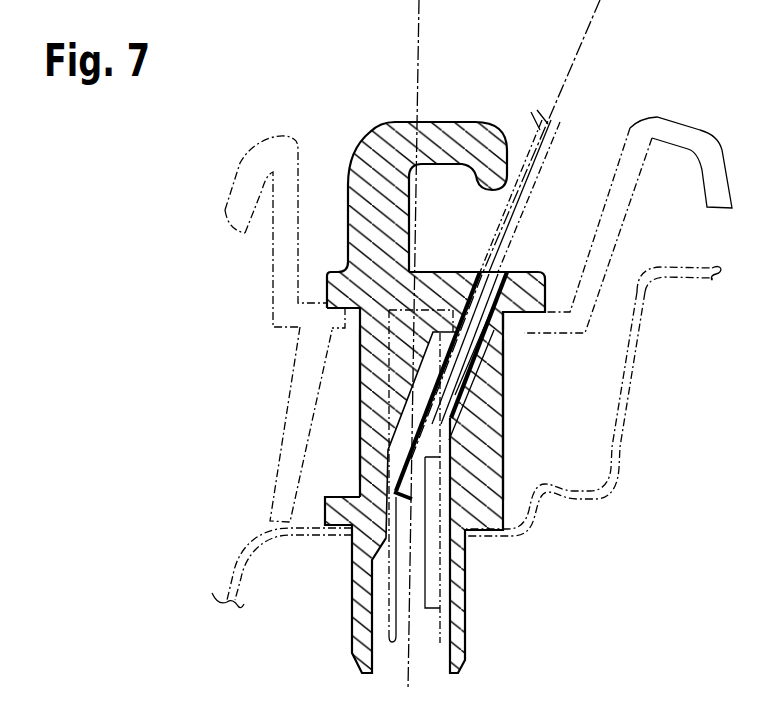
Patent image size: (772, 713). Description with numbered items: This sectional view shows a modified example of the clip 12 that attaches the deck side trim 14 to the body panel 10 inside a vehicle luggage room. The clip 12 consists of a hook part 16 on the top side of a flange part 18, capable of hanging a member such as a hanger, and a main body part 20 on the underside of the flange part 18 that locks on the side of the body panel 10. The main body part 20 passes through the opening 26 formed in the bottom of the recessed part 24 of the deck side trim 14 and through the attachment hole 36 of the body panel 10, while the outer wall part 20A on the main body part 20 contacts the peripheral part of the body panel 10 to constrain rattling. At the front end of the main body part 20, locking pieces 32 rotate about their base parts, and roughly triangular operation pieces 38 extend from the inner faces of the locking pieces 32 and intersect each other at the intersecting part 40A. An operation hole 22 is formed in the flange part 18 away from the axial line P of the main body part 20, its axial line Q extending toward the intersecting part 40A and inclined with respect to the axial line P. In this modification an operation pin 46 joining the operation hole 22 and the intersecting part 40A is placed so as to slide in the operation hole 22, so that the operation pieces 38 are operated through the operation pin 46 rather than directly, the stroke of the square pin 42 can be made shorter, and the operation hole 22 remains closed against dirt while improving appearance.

The body panel 10 is at (622, 436).
The clip 12 is at (502, 104).
The deck side trim 14 is at (680, 122).
The hook part 16 is at (400, 121).
The flange part 18 is at (540, 273).
The main body part 20 is at (510, 414).
The outer wall part 20A is at (484, 457).
The operation hole 22 is at (497, 262).
The recessed part 24 is at (616, 148).
The opening 26 is at (524, 333).
The locking piece 32 is at (404, 573).
The attachment hole 36 is at (353, 555).
The operation piece 38 is at (430, 592).
The intersecting part 40A is at (394, 491).
The square pin 42 is at (540, 165).
The operation pin 46 is at (504, 388).
The axial line of the main body part P is at (420, 45).
The axial line of the operation hole Q is at (582, 50).